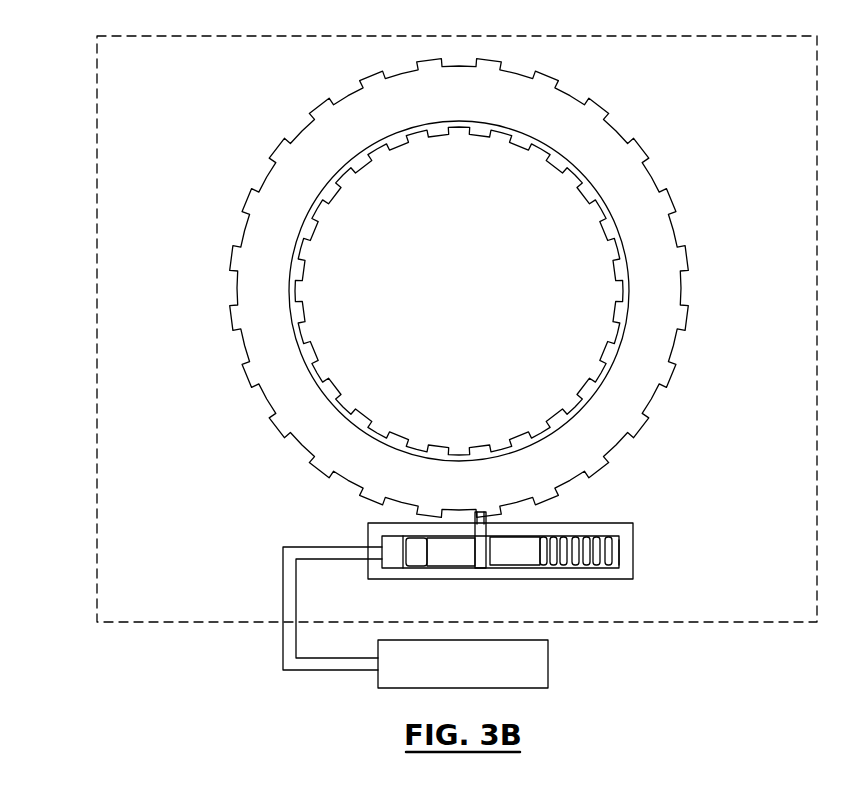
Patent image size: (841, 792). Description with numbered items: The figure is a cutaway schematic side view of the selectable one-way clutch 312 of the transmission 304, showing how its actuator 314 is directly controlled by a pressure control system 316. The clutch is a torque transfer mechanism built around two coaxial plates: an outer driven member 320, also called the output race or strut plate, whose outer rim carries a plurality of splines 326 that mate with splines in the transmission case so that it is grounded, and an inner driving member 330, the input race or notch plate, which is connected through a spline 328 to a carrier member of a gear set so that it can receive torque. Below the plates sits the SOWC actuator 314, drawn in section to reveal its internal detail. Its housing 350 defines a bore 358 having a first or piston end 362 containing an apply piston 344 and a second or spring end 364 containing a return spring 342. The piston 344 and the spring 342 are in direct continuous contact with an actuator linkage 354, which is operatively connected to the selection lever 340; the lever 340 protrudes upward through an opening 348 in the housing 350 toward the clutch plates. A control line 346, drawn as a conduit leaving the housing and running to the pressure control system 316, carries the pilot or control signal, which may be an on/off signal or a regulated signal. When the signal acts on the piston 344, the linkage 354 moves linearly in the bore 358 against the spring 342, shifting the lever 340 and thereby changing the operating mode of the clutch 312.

The transmission 304 is at (97, 117).
The selectable one-way clutch 312 is at (465, 288).
The SOWC actuator 314 is at (510, 537).
The pressure control system 316 is at (442, 676).
The driven member 320 is at (645, 186).
The splines 326 is at (490, 288).
The spline 328 is at (569, 171).
The driving member 330 is at (484, 127).
The selection lever 340 is at (457, 545).
The return spring 342 is at (598, 567).
The apply piston 344 is at (413, 562).
The control line 346 is at (283, 650).
The opening 348 is at (480, 520).
The housing 350 is at (501, 537).
The actuator linkage 354 is at (505, 558).
The bore 358 is at (392, 568).
The piston end 362 is at (386, 541).
The spring end 364 is at (617, 563).